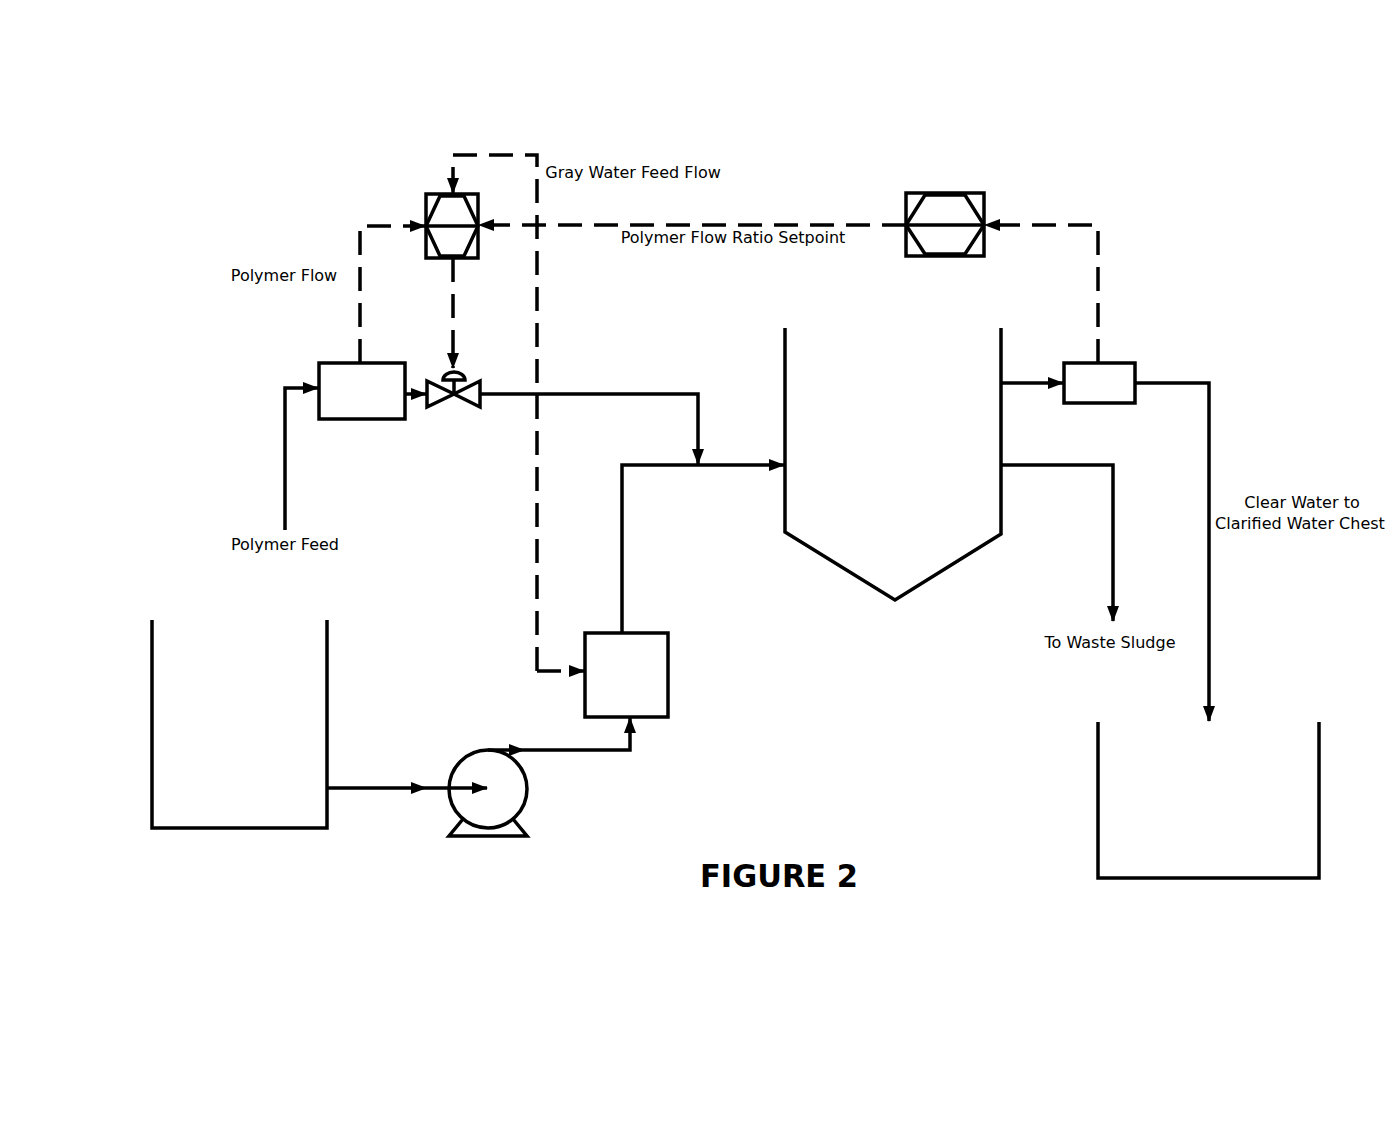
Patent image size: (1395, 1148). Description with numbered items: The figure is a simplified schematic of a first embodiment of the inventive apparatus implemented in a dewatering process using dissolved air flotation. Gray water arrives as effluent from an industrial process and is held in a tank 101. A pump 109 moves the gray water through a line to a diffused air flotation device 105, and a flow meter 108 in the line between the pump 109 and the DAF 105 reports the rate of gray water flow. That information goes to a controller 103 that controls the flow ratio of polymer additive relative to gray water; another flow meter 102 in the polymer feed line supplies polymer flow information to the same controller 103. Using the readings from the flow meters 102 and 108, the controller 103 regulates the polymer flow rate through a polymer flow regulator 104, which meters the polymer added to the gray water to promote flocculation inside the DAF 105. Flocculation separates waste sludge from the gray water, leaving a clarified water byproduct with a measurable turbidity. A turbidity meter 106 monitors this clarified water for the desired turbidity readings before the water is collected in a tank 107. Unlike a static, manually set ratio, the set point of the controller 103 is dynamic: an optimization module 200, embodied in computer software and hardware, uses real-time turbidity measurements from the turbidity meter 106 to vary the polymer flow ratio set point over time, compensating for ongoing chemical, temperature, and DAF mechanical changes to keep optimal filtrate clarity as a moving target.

The tank 101 is at (149, 656).
The flow meter 102 is at (317, 362).
The controller 103 is at (427, 192).
The polymer flow regulator 104 is at (452, 414).
The diffused air flotation device 105 is at (783, 333).
The turbidity meter 106 is at (1085, 360).
The tank 107 is at (1096, 739).
The flow meter 108 is at (670, 642).
The pump 109 is at (462, 752).
The optimization module 200 is at (940, 190).